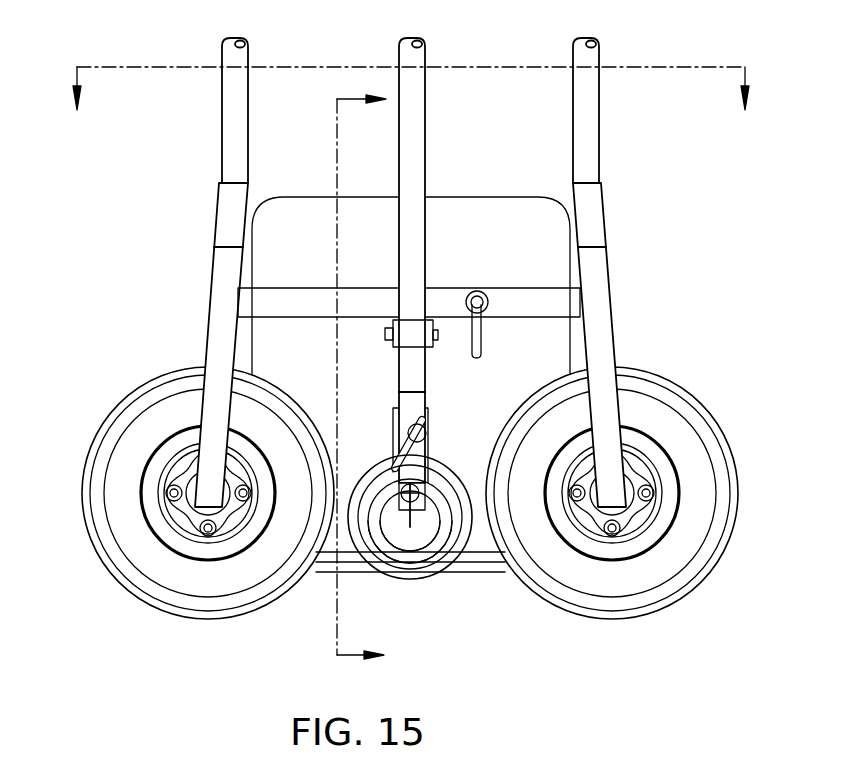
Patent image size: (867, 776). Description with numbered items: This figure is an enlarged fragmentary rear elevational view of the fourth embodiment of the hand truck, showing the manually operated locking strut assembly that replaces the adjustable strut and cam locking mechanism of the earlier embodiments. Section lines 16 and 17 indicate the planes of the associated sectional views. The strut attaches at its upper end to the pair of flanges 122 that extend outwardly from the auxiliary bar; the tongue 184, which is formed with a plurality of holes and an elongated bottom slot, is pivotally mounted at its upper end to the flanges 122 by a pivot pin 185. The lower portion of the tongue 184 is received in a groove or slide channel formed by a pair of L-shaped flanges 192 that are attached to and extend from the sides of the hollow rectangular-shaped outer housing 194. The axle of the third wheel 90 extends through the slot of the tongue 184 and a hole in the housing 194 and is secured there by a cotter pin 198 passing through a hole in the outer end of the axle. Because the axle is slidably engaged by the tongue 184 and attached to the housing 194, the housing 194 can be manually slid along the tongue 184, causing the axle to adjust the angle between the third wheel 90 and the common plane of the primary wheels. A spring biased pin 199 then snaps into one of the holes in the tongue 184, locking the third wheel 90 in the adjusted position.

The section line 16- 16 is at (411, 111).
The section line 17- 17 is at (339, 377).
The flanges 122 is at (427, 322).
The pivot pin 185 is at (385, 337).
The tongue 184 is at (413, 385).
The outer housing 194 is at (423, 395).
The L-shaped flanges 192 is at (430, 422).
The third wheel 90 is at (393, 572).
The cotter pin 198 is at (410, 527).
The spring biased pin 199 is at (437, 533).